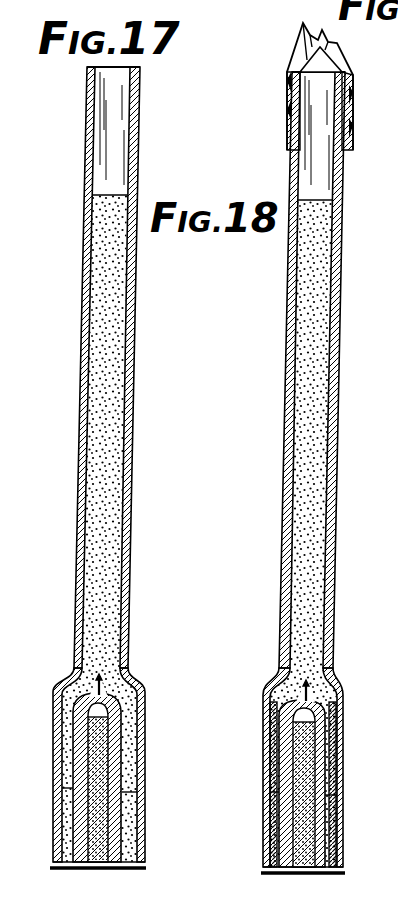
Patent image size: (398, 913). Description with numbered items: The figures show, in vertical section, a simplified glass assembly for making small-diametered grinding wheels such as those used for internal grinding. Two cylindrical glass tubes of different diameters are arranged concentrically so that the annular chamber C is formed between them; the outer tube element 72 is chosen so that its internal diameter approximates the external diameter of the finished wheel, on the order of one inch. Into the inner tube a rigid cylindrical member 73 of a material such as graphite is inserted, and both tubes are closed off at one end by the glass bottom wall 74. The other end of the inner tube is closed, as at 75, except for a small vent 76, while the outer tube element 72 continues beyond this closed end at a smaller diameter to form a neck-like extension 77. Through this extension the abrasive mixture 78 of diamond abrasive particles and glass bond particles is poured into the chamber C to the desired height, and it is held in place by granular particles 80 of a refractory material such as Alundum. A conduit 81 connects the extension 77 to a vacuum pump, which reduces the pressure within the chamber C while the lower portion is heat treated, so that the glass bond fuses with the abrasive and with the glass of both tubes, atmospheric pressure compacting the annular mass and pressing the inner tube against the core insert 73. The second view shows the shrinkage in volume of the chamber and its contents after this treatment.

In FIG. 17, the neck-like extension 77 is at (79, 478).
In FIG. 18, the neck-like extension 77 is at (284, 481).
In FIG. 17, the granular particles 80 is at (104, 340).
In FIG. 18, the granular particles 80 is at (310, 342).
In FIG. 18, the conduit 81 is at (289, 100).
In FIG. 17, the vent 76 is at (68, 688).
In FIG. 18, the vent 76 is at (276, 697).
In FIG. 17, the closed end of inner tube element 75 is at (140, 695).
In FIG. 18, the closed end of inner tube element 75 is at (343, 700).
In FIG. 17, the cylindrical member 73 is at (100, 770).
In FIG. 18, the cylindrical member 73 is at (312, 775).
In FIG. 17, the outer tube element 72 is at (56, 770).
In FIG. 18, the outer tube element 72 is at (272, 775).
In FIG. 17, the mixture of diamond abrasive particles and glass bond particles 78 is at (128, 832).
In FIG. 18, the mixture of diamond abrasive particles and glass bond particles 78 is at (339, 835).
In FIG. 17, the annular chamber C is at (56, 825).
In FIG. 18, the annular chamber C is at (266, 832).
In FIG. 17, the glass bottom wall 74 is at (98, 877).
In FIG. 18, the glass bottom wall 74 is at (308, 879).